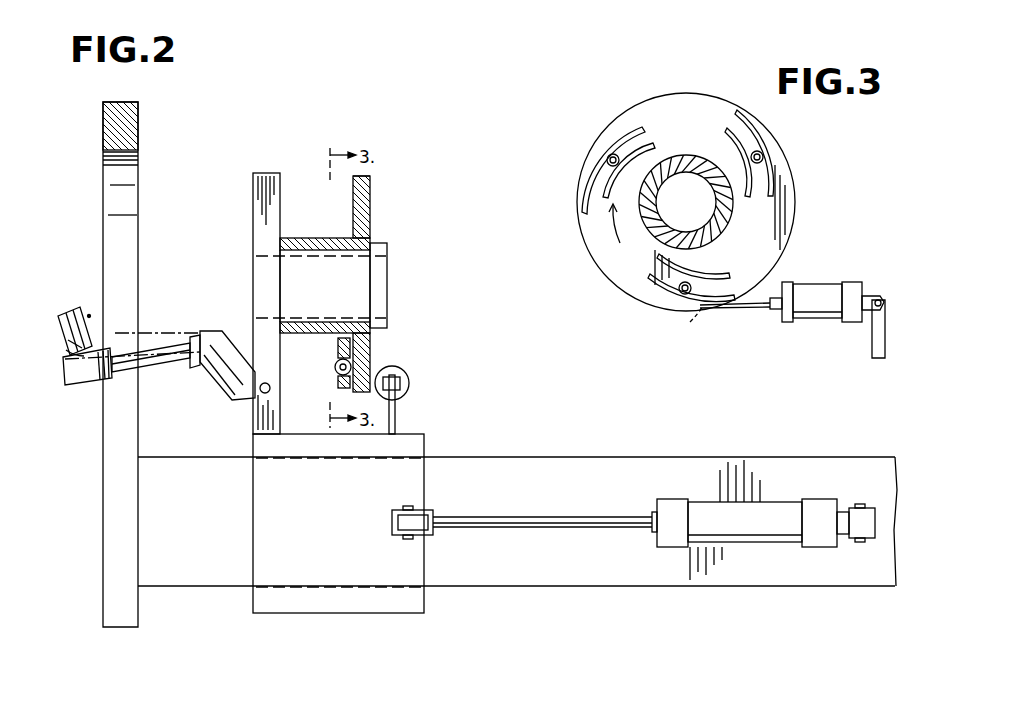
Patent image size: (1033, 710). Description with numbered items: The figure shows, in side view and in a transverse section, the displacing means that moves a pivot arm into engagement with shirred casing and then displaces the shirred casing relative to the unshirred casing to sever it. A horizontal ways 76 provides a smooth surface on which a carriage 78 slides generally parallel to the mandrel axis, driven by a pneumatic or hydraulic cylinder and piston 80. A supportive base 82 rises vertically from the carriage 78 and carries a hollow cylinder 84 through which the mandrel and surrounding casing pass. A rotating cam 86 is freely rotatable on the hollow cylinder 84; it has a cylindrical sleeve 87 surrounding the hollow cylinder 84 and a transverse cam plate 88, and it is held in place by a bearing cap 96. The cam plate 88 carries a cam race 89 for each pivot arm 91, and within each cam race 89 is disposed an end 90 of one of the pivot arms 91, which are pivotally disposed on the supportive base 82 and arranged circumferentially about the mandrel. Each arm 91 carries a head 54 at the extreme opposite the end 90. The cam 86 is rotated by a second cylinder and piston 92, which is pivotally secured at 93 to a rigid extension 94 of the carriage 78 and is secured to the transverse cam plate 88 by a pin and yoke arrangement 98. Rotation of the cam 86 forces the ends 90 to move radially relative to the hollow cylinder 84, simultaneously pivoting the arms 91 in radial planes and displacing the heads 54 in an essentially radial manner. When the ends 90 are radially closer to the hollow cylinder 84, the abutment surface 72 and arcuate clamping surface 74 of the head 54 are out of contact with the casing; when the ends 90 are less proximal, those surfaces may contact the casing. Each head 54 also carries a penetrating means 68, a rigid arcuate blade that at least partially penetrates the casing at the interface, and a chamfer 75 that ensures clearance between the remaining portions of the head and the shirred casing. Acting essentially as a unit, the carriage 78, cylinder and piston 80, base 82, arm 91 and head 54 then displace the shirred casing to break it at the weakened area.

In FIG. 2, the head 54 is at (100, 386).
In FIG. 2, the penetrating means 68 is at (93, 337).
In FIG. 2, the abutment surface 72 is at (60, 320).
In FIG. 2, the arcuate clamping surface 74 is at (67, 343).
In FIG. 2, the chamfer 75 is at (66, 352).
In FIG. 2, the horizontal ways 76 is at (612, 465).
In FIG. 2, the carriage 78 is at (336, 512).
In FIG. 2, the cylinder and piston 80 is at (762, 508).
In FIG. 2, the supportive base 82 is at (253, 222).
In FIG. 2, the hollow cylinder 84 is at (332, 284).
In FIG. 3, the hollow cylinder 84 is at (700, 188).
In FIG. 2, the rotating cam 86 is at (347, 228).
In FIG. 2, the cylindrical sleeve 87 is at (333, 238).
In FIG. 3, the cylindrical sleeve 87 is at (728, 228).
In FIG. 2, the transverse cam plate 88 is at (371, 200).
In FIG. 2, the cam race 89 is at (338, 362).
In FIG. 3, the cam race 89 is at (740, 130).
In FIG. 2, the end of pivot arm 90 is at (350, 390).
In FIG. 3, the end of pivot arm 90 is at (615, 153).
In FIG. 2, the pivot arm 91 is at (218, 374).
In FIG. 2, the second cylinder and piston 92 is at (396, 372).
In FIG. 3, the second cylinder and piston 92 is at (826, 312).
In FIG. 3, the pivotal securement 93 is at (873, 292).
In FIG. 2, the rigid extension 94 is at (396, 405).
In FIG. 3, the rigid extension 94 is at (886, 340).
In FIG. 2, the bearing cap 96 is at (390, 295).
In FIG. 3, the pin and yoke arrangement 98 is at (684, 321).